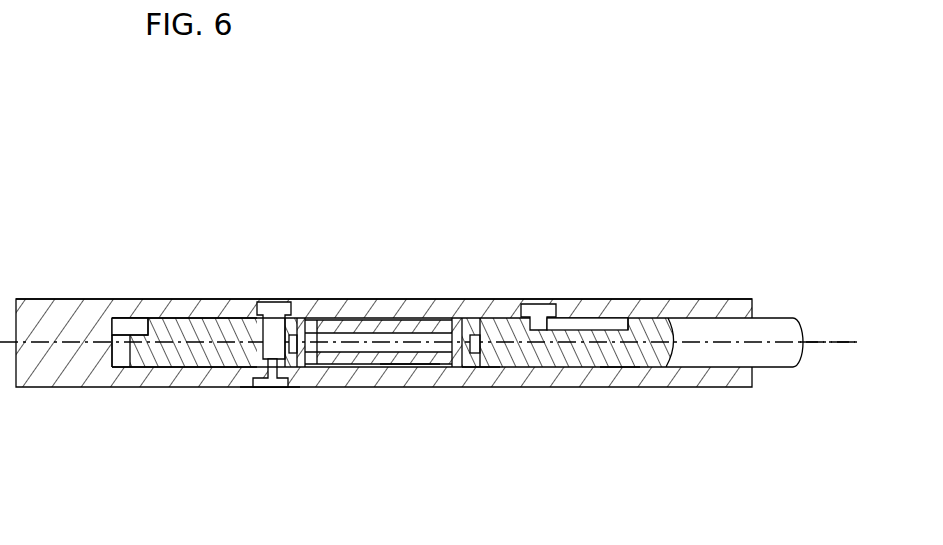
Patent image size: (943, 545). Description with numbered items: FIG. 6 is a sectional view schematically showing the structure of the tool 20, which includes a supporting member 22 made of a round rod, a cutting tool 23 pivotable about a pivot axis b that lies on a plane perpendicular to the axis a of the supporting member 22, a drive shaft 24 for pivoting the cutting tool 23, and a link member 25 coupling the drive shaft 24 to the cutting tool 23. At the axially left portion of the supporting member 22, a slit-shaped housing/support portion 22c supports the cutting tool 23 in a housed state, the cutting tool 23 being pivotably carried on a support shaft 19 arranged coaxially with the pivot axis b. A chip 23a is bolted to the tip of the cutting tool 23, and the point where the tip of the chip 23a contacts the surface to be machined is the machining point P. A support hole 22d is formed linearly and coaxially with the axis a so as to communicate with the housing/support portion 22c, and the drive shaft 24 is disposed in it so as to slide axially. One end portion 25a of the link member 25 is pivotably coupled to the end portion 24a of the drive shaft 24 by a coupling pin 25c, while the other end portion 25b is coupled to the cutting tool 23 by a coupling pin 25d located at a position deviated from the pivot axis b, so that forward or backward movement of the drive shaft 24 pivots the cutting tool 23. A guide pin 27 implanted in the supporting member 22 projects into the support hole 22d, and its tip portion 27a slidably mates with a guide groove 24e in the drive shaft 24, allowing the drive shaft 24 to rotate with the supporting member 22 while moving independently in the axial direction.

The tool 20 is at (443, 268).
The supporting member 22 is at (137, 299).
The housing/support portion 22c is at (200, 330).
The support hole 22d is at (614, 360).
The cutting tool 23 is at (227, 316).
The chip 23a is at (128, 327).
The support shaft 19 is at (278, 301).
The link member 25 is at (383, 328).
The one end portion of the link member 25a is at (481, 373).
The other end portion of the link member 25b is at (297, 380).
The coupling pin 25c is at (457, 365).
The coupling pin 25d is at (313, 378).
The drive shaft 24 is at (697, 312).
The end portion of the drive shaft 24a is at (420, 362).
The guide groove 24e is at (627, 327).
The guide pin 27 is at (533, 303).
The tip portion of the guide pin 27a is at (565, 328).
The machining point P is at (110, 333).
The axis a is at (830, 342).
The pivot axis b is at (270, 403).